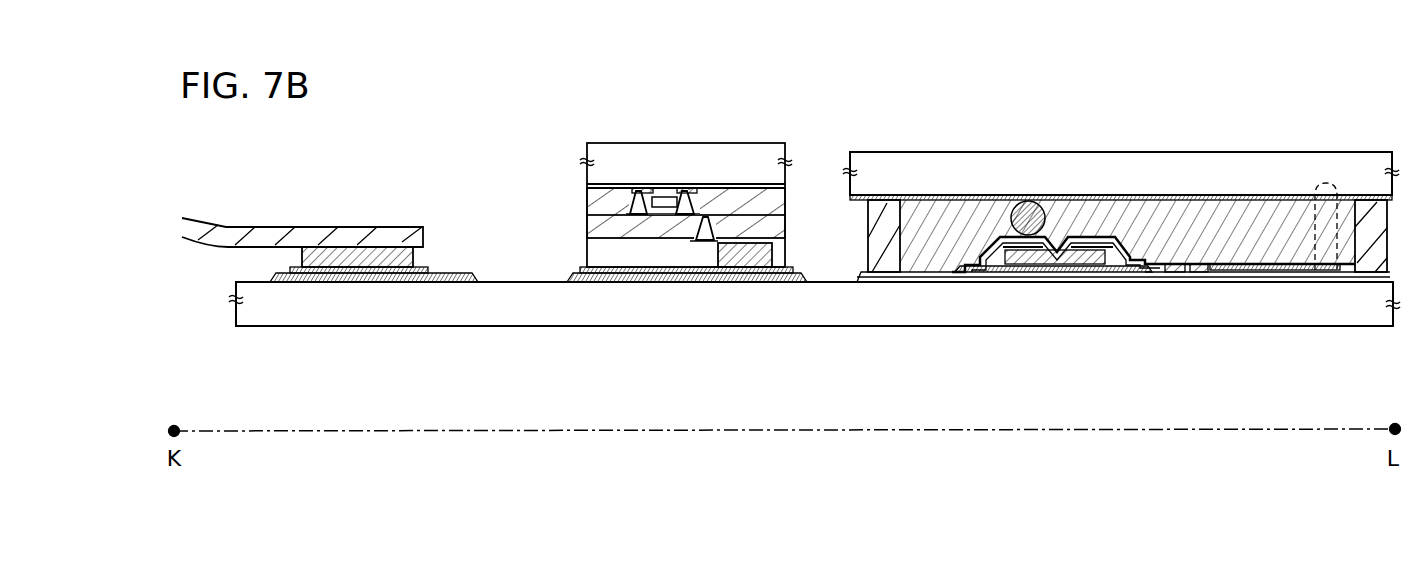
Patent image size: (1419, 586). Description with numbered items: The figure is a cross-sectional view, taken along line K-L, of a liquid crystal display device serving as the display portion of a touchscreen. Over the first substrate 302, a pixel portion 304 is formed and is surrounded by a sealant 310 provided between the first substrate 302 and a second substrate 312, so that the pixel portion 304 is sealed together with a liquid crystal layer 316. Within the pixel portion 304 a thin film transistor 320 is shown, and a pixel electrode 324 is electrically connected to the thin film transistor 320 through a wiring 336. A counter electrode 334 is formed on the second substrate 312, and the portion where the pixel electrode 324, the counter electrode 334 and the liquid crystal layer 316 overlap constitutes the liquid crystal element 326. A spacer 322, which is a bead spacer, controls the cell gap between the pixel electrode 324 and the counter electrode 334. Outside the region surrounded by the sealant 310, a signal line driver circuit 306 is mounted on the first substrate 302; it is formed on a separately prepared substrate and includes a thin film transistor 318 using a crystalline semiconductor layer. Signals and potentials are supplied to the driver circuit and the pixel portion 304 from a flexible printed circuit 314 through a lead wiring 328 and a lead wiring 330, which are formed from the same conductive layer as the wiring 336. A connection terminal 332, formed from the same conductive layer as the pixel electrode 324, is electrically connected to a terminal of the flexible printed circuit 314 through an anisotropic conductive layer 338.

The first substrate 302 is at (580, 316).
The pixel portion 304 is at (923, 341).
The signal line driver circuit 306 is at (585, 101).
The sealant 310 is at (887, 198).
The second substrate 312 is at (1199, 172).
The flexible printed circuit (FPC) 314 is at (277, 238).
The liquid crystal layer 316 is at (1256, 205).
The thin film transistor 318 is at (622, 138).
The thin film transistor 320 is at (1135, 290).
The spacer 322 is at (1028, 200).
The pixel electrode 324 is at (1300, 278).
The liquid crystal element 326 is at (1326, 183).
The lead wiring 328 is at (793, 283).
The lead wiring 330 is at (370, 280).
The connection terminal 332 is at (313, 280).
The counter electrode 334 is at (1097, 200).
The wiring 336 is at (978, 273).
The anisotropic conductive layer 338 is at (393, 255).